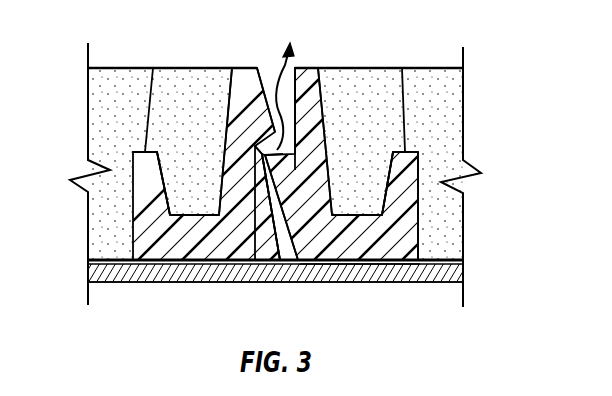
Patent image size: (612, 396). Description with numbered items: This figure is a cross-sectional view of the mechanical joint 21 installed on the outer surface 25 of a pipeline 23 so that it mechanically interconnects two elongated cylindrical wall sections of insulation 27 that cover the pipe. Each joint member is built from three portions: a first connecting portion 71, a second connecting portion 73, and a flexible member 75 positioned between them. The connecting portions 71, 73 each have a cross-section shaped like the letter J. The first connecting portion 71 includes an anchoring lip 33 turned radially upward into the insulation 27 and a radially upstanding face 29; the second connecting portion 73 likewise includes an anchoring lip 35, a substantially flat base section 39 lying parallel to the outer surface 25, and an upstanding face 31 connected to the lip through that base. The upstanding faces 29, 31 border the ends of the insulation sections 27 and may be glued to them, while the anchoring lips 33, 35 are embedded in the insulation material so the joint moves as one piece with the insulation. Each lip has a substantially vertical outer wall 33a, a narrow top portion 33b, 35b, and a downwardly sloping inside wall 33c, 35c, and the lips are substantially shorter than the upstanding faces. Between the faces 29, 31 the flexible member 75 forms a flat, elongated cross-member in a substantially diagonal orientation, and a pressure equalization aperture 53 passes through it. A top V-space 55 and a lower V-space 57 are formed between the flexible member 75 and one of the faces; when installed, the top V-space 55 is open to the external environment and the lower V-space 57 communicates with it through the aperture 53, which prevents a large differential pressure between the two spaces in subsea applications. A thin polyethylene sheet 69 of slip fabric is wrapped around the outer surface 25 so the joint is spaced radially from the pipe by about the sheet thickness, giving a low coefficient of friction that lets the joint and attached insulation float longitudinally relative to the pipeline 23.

The mechanical joint 21 is at (224, 268).
The pipeline 23 is at (355, 270).
The outer surface 25 is at (103, 267).
The insulation 27 is at (97, 103).
The upstanding face 29 is at (307, 97).
The upstanding face 31 is at (250, 96).
The anchoring lip 33 is at (397, 163).
The vertical outer wall 33a is at (420, 197).
The narrow top portion 33b is at (407, 50).
The sloping inside wall 33c is at (384, 160).
The anchoring lip 35 is at (143, 165).
The narrow top portion 35b is at (153, 68).
The sloping inside wall 35c is at (165, 160).
The base section 39 is at (202, 248).
The pressure equalization aperture 53 is at (268, 154).
The top V-space 55 is at (257, 68).
The lower V-space 57 is at (282, 248).
The polyethylene sheet 69 is at (463, 261).
The first connecting portion 71 is at (355, 113).
The second connecting portion 73 is at (200, 113).
The flexible member 75 is at (286, 202).